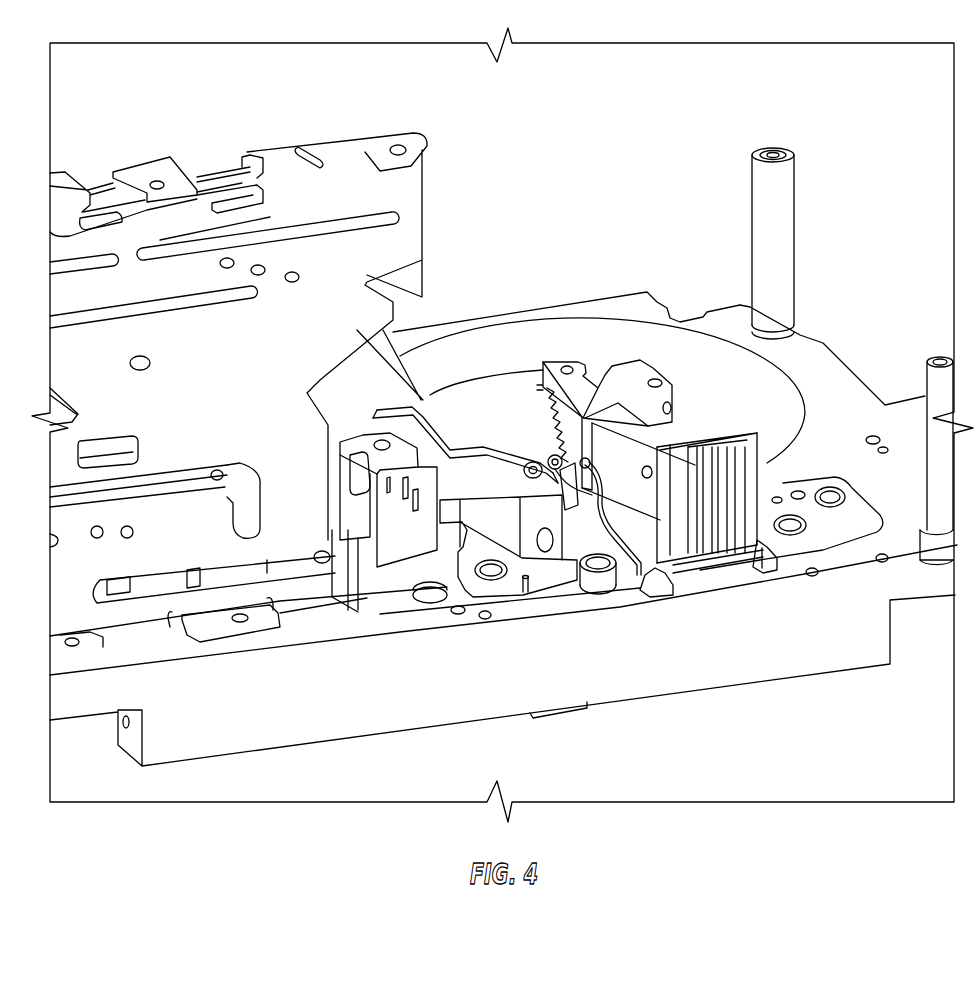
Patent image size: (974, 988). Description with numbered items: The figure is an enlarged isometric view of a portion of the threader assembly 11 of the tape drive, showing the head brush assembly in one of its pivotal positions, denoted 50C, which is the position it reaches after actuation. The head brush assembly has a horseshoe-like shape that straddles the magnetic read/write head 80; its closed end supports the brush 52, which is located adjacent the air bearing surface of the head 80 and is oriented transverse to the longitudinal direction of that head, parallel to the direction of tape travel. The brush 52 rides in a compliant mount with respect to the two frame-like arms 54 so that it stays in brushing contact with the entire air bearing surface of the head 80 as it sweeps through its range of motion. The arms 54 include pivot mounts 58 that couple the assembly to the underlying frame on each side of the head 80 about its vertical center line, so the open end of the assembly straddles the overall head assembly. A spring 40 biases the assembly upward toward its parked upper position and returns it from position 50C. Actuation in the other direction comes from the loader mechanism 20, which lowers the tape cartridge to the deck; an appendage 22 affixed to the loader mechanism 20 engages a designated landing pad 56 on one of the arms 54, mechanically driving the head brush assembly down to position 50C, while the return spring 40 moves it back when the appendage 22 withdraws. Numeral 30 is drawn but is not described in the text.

The threader assembly 11 is at (843, 100).
The loader mechanism 20 is at (372, 388).
The appendage 22 is at (473, 443).
The bracket 30 is at (395, 528).
The spring 40 is at (568, 412).
The head brush assembly lower position 50C is at (783, 560).
The brush 52 is at (722, 585).
The frame-like arms 54 is at (623, 522).
The landing pad 56 is at (567, 500).
The pivot mounts 58 is at (540, 463).
The head 80 is at (722, 437).